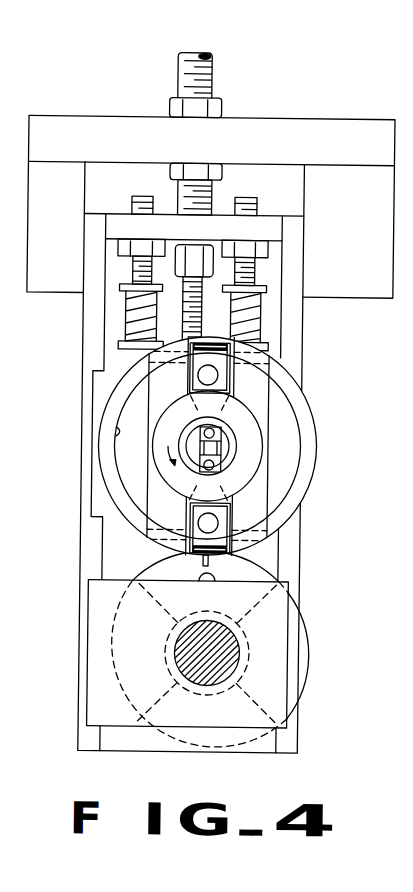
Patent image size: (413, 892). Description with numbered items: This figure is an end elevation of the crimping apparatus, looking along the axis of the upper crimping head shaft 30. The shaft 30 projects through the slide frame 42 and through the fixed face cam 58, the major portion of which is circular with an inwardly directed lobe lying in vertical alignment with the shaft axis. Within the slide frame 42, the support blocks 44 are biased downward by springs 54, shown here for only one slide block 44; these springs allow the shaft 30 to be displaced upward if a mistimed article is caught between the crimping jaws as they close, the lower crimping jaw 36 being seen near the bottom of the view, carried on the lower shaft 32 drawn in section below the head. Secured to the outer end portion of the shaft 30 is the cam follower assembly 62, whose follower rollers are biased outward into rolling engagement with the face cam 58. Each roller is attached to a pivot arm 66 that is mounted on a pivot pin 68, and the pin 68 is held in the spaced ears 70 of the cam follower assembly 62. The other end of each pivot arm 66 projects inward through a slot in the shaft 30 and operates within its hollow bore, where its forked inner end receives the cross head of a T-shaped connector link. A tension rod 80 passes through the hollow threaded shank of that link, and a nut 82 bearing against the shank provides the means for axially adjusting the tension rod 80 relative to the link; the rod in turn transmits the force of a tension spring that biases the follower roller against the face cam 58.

The upper crimping head shaft 30 is at (232, 446).
The drive shaft 32 is at (184, 646).
The crimping jaw 36 is at (262, 571).
The slide frame 42 is at (82, 345).
The support block 44 is at (108, 364).
The spring 54 is at (128, 316).
The fixed face cam 58 is at (116, 432).
The cam follower assembly 62 is at (278, 418).
The pivot arm 66 is at (190, 376).
The pivot pin 68 is at (272, 358).
The spaced ears 70 is at (149, 384).
The tension rod 80 is at (211, 431).
The nut 82 is at (208, 475).